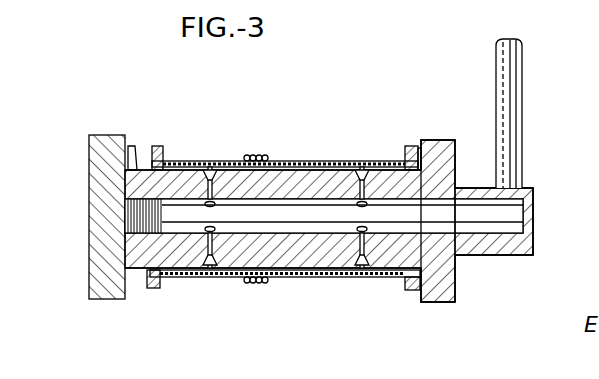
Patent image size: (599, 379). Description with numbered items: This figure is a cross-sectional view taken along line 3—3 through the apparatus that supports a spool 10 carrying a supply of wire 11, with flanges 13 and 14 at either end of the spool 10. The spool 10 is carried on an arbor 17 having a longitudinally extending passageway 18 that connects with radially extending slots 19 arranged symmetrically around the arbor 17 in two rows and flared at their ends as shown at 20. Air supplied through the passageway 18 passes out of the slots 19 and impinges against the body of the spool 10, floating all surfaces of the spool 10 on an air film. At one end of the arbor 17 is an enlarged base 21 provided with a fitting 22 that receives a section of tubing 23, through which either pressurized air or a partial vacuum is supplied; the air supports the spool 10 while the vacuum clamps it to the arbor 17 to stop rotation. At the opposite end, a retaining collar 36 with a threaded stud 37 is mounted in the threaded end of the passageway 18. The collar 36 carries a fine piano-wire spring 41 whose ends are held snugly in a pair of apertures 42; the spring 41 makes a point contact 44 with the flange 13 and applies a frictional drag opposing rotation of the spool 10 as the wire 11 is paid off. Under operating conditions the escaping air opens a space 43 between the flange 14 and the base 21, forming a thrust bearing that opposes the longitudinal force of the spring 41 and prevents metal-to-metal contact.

The section line 3 is at (458, 0).
The spool 10 is at (303, 161).
The wire 11 is at (258, 155).
The flange 13 is at (160, 147).
The flange 14 is at (410, 147).
The arbor 17 is at (303, 278).
The longitudinally extending passageway 18 is at (397, 233).
The radially extending slots 19 is at (209, 168).
The flared ends 20 is at (206, 270).
The enlarged base 21 is at (434, 298).
The fitting 22 is at (490, 256).
The tubing 23 is at (522, 140).
The retaining collar 36 is at (89, 187).
The threaded stud 37 is at (134, 223).
The spring 41 is at (134, 147).
The apertures 42 is at (120, 148).
The space 43 is at (421, 147).
The point contact 44 is at (152, 289).